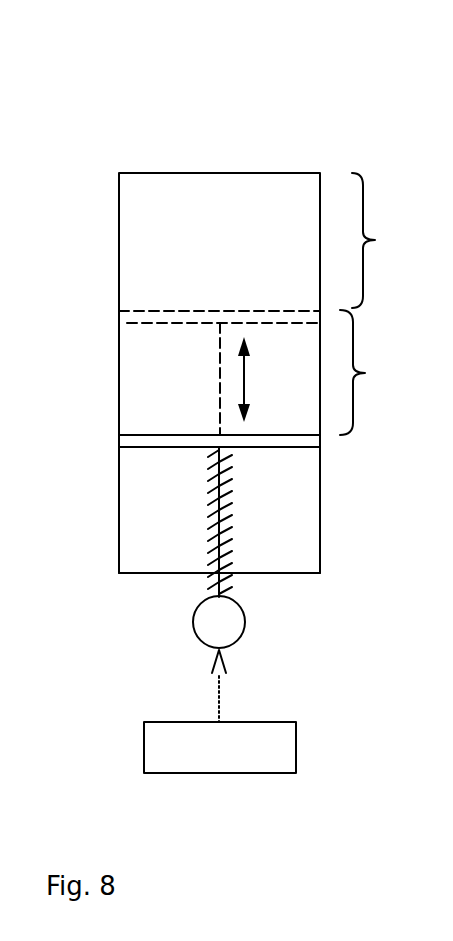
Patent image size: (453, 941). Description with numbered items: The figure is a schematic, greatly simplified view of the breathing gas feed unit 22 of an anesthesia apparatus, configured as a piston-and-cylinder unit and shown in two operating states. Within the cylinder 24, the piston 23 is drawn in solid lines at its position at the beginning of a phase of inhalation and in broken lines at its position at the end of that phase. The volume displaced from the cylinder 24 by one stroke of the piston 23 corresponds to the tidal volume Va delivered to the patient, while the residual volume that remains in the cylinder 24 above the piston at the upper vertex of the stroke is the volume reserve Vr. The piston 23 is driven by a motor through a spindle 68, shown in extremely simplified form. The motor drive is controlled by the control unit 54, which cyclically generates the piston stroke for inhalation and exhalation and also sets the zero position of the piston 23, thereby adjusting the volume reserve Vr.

The breathing gas feed unit 22 is at (114, 86).
The piston 23 is at (148, 323).
The cylinder 24 is at (117, 548).
The spindle 68 is at (223, 488).
The control unit 54 is at (221, 773).